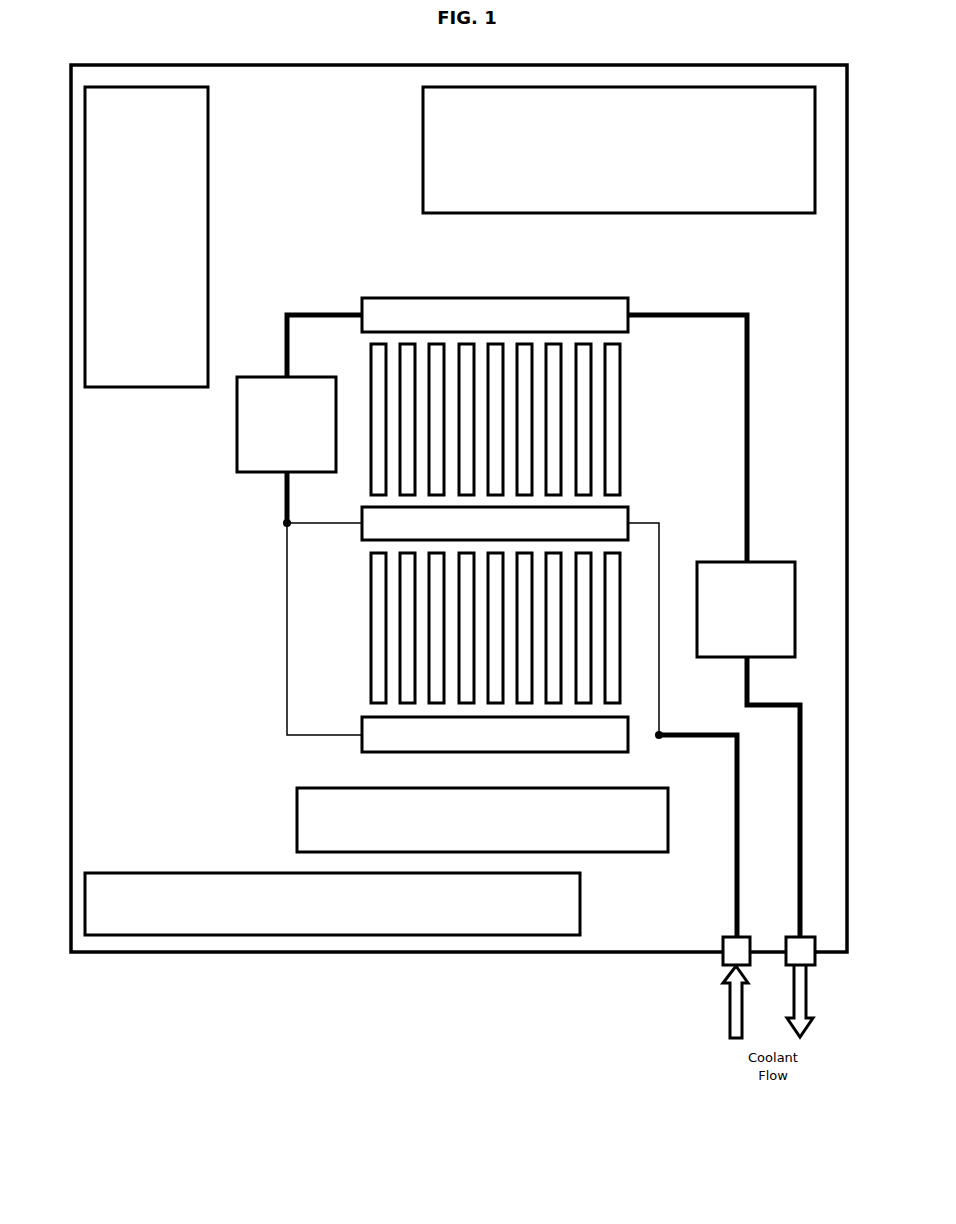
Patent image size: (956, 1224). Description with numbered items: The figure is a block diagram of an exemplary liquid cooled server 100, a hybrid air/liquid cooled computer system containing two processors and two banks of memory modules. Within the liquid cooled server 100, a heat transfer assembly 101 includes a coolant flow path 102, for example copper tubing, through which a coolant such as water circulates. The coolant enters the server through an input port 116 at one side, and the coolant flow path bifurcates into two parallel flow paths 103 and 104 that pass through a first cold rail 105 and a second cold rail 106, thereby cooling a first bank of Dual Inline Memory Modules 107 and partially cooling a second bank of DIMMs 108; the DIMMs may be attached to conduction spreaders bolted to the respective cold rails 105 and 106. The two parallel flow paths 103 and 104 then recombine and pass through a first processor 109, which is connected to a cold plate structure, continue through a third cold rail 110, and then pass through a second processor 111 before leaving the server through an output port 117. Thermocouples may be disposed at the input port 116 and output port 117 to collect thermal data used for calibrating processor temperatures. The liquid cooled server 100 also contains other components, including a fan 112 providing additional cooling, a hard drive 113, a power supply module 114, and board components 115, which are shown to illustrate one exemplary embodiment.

The liquid cooled server 100 is at (778, 65).
The heat transfer assembly 101 is at (735, 908).
The coolant flow path 102 is at (724, 847).
The first parallel flow path 103 is at (640, 743).
The second parallel flow path 104 is at (665, 699).
The first cold rail 105 is at (383, 750).
The second cold rail 106 is at (360, 542).
The first bank of Dual Inline Memory Modules 107 is at (354, 635).
The second bank of Dual Inline Memory Modules 108 is at (636, 455).
The first processor 109 is at (262, 473).
The third cold rail 110 is at (414, 298).
The second processor 111 is at (779, 562).
The fan 112 is at (297, 821).
The hard drive 113 is at (167, 873).
The power supply module 114 is at (208, 197).
The board components 115 is at (423, 143).
The input port 116 is at (721, 957).
The output port 117 is at (818, 965).